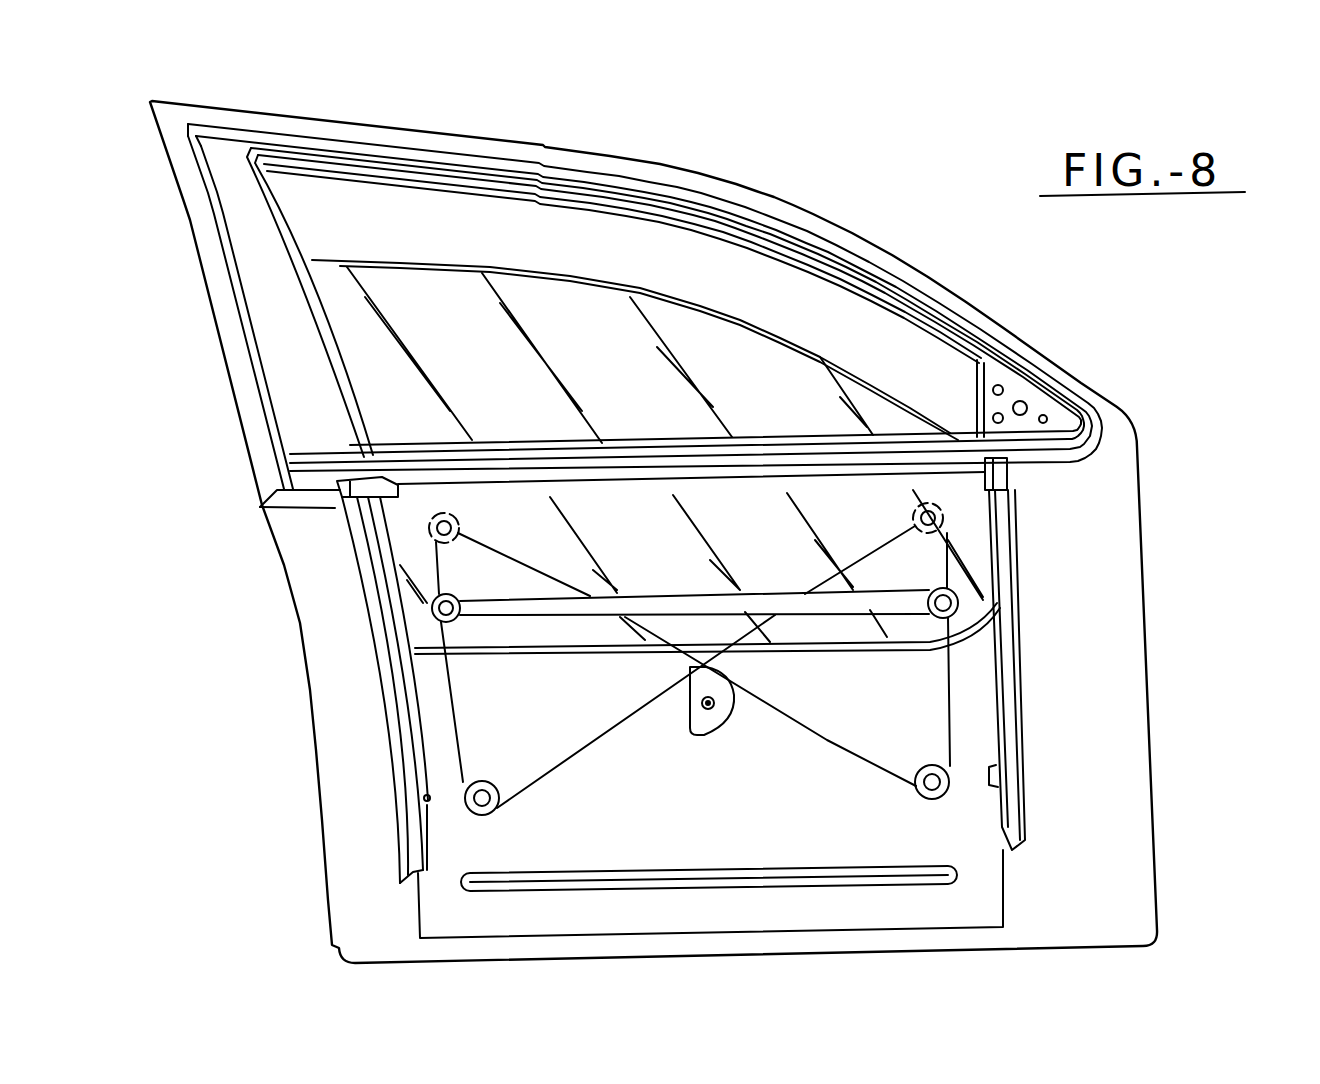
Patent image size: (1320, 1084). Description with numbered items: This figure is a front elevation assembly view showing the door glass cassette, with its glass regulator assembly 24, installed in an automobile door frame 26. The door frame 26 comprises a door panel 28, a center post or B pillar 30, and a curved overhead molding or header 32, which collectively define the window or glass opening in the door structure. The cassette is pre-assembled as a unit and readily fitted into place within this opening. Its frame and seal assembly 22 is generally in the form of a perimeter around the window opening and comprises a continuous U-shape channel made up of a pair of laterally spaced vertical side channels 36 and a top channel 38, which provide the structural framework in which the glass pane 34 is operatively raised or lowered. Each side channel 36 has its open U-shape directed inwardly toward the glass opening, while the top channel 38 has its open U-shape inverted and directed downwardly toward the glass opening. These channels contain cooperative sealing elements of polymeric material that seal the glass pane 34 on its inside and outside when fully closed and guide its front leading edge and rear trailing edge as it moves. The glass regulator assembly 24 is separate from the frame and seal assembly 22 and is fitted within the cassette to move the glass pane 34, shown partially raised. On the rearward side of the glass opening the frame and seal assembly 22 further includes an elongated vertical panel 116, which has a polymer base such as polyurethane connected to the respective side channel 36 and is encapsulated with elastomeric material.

The frame and seal assembly 22 is at (771, 215).
The glass regulator assembly 24 is at (955, 658).
The automobile door frame 26 is at (665, 165).
The door panel 28 is at (338, 905).
The center post or B pillar 30 is at (230, 337).
The curved overhead molding or header 32 is at (415, 156).
The glass pane 34 is at (455, 265).
The side channels 36 is at (390, 708).
The top channel 38 is at (563, 200).
The elongated vertical panel 116 is at (260, 250).